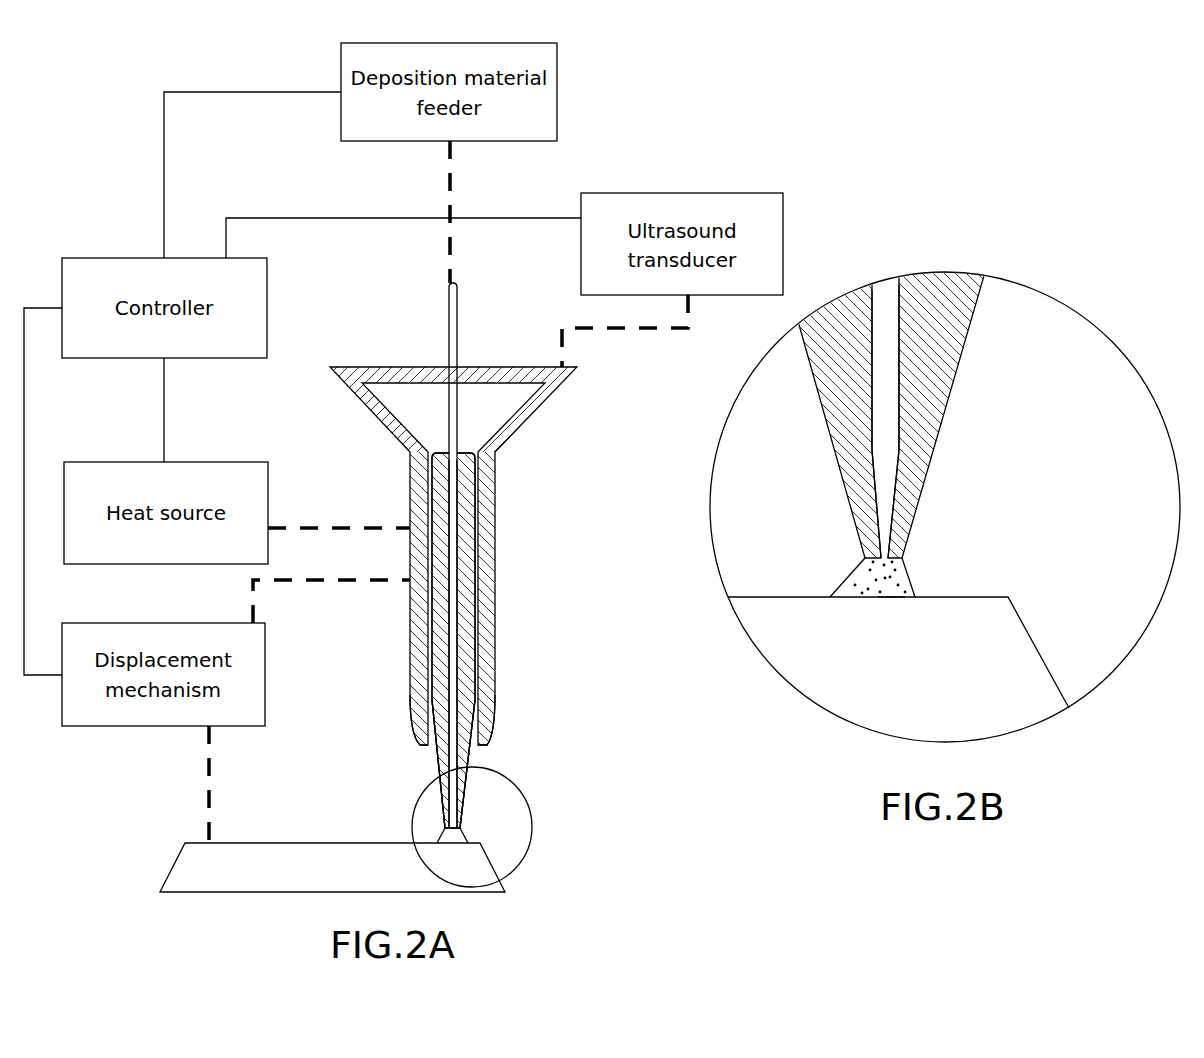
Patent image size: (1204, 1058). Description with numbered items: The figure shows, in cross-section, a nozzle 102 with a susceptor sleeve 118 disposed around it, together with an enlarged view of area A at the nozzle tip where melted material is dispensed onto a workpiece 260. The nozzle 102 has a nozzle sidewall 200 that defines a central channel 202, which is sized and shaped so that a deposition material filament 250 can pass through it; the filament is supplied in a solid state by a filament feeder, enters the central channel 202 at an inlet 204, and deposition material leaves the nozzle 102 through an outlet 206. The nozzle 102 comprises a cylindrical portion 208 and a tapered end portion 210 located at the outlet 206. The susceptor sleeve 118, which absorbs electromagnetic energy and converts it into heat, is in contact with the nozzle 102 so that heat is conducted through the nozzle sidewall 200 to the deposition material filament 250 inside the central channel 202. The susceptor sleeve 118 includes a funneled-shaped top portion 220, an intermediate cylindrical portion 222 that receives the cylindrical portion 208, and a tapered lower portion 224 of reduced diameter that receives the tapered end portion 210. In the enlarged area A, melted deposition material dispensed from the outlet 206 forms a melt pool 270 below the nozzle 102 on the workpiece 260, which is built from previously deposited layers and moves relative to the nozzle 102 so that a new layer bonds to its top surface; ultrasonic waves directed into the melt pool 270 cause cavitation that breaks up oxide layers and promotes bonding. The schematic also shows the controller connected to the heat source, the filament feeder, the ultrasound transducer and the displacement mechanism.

In FIG. 2A, the nozzle 102 is at (438, 514).
In FIG. 2A, the susceptor sleeve 118 is at (497, 473).
In FIG. 2A, the nozzle sidewall 200 is at (440, 648).
In FIG. 2A, the central channel 202 is at (456, 600).
In FIG. 2B, the central channel 202 is at (886, 351).
In FIG. 2A, the inlet 204 is at (458, 448).
In FIG. 2A, the outlet 206 is at (465, 829).
In FIG. 2B, the outlet 206 is at (890, 597).
In FIG. 2A, the cylindrical portion 208 is at (470, 517).
In FIG. 2A, the tapered end portion 210 is at (442, 768).
In FIG. 2B, the tapered end portion 210 is at (927, 463).
In FIG. 2A, the funneled-shaped top portion 220 is at (362, 400).
In FIG. 2A, the intermediate cylindrical portion 222 is at (497, 653).
In FIG. 2A, the tapered lower portion 224 is at (410, 723).
In FIG. 2A, the deposition material filament 250 is at (457, 322).
In FIG. 2A, the workpiece 260 is at (315, 879).
In FIG. 2B, the workpiece 260 is at (908, 692).
In FIG. 2B, the melt pool 270 is at (858, 582).
In FIG. 2A, the area A is at (527, 802).